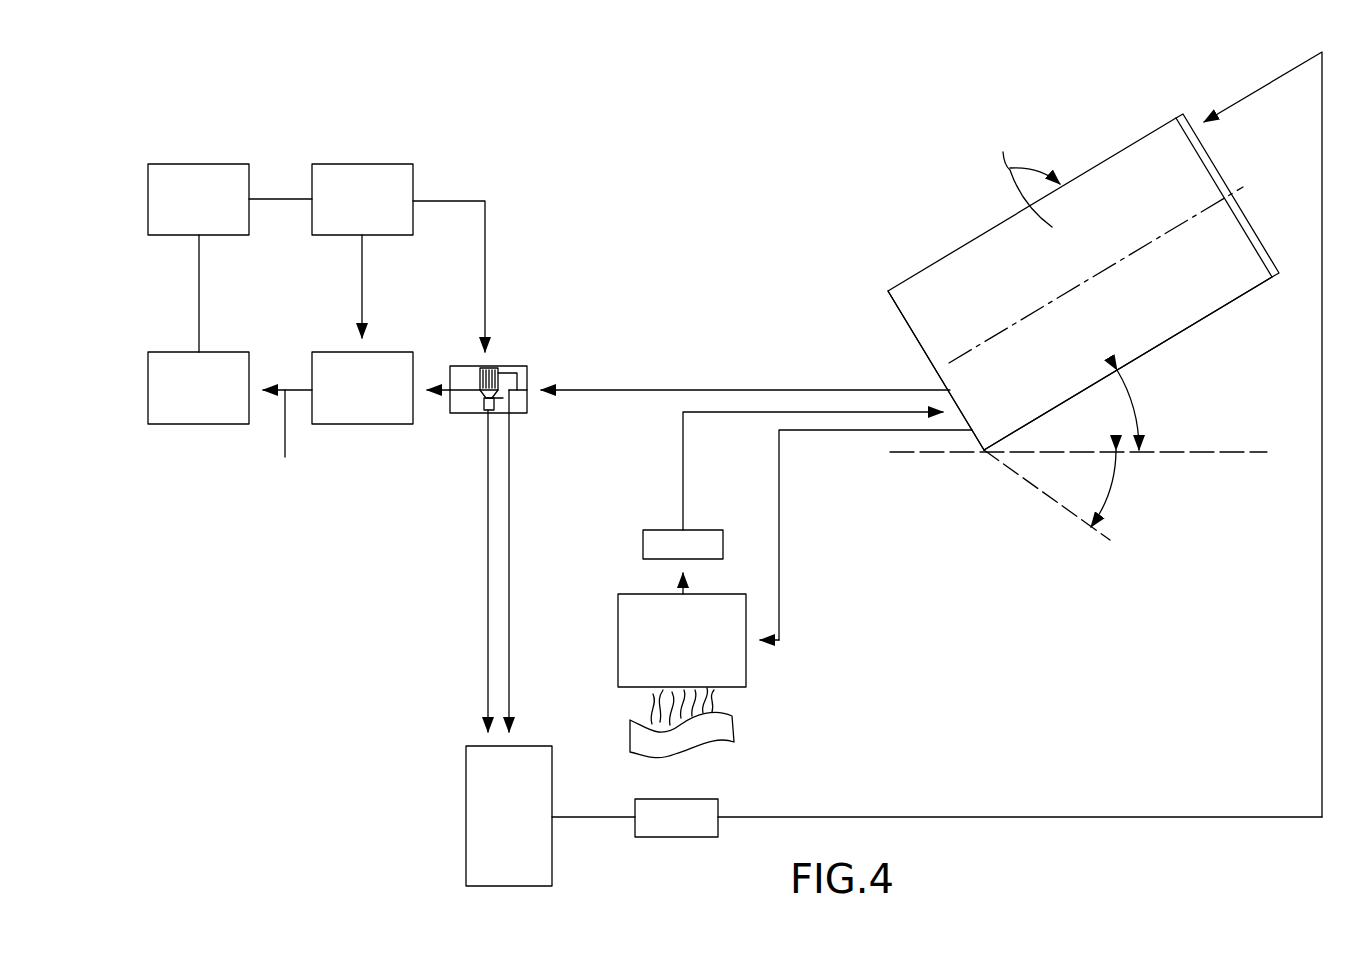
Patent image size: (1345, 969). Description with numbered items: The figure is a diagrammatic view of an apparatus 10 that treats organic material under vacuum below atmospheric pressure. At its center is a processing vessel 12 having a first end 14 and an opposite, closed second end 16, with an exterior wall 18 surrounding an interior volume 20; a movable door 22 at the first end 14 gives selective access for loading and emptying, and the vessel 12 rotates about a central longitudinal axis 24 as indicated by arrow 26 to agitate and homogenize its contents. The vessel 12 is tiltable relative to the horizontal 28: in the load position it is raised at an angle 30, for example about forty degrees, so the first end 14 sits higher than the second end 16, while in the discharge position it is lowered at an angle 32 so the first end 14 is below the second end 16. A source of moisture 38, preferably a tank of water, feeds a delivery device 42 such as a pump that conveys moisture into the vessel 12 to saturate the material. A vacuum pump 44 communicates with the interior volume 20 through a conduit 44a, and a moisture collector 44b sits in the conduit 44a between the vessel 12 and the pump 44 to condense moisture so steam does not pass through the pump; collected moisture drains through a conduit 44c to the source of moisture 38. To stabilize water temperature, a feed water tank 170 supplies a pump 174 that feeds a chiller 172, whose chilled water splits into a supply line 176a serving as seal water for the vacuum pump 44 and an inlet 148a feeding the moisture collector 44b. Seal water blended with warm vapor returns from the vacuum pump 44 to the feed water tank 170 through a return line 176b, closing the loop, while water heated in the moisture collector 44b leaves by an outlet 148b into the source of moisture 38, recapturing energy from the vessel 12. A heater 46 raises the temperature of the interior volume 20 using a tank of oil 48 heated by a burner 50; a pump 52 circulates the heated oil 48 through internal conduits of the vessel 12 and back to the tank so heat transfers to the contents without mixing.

The apparatus 10 is at (618, 184).
The processing vessel 12 is at (1212, 312).
The first end 14 is at (1262, 254).
The second end 16 is at (921, 358).
The exterior wall 18 is at (1166, 342).
The interior volume 20 is at (1087, 171).
The movable door 22 is at (1222, 183).
The central longitudinal axis 24 is at (1270, 171).
The arrow 26 is at (1021, 176).
The horizontal 28 is at (1212, 455).
The angle 30 is at (1136, 412).
The angle 32 is at (1110, 493).
The source of moisture 38 is at (541, 746).
The delivery device 42 is at (690, 838).
The vacuum pump 44 is at (363, 424).
The conduit 44a is at (437, 390).
The moisture collector 44b is at (510, 366).
The conduit 44c is at (488, 601).
The heater 46 is at (613, 533).
The tank of oil 48 is at (618, 638).
The burner 50 is at (732, 741).
The pump 52 is at (705, 530).
The inlet 148a is at (485, 251).
The outlet 148b is at (509, 583).
The feed water tank 170 is at (198, 424).
The chiller 172 is at (348, 164).
The pump 174 is at (199, 164).
The supply line 176a is at (362, 268).
The return line 176b is at (290, 438).